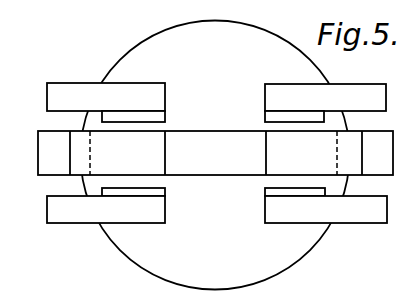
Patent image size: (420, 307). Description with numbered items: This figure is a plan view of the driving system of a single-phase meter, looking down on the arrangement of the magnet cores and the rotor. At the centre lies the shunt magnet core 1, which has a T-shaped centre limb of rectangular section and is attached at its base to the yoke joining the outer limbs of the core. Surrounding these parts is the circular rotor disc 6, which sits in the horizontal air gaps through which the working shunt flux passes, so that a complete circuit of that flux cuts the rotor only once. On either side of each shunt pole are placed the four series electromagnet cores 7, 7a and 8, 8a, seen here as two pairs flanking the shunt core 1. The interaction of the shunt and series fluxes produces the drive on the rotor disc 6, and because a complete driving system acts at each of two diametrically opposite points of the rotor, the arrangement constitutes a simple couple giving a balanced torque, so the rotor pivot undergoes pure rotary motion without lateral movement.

The shunt magnet core 1 is at (215, 153).
The rotor disc 6 is at (215, 155).
The series electromagnet core 7 is at (149, 93).
The series electromagnet core 7a is at (157, 207).
The series electromagnet core 8 is at (278, 97).
The series electromagnet core 8a is at (282, 208).